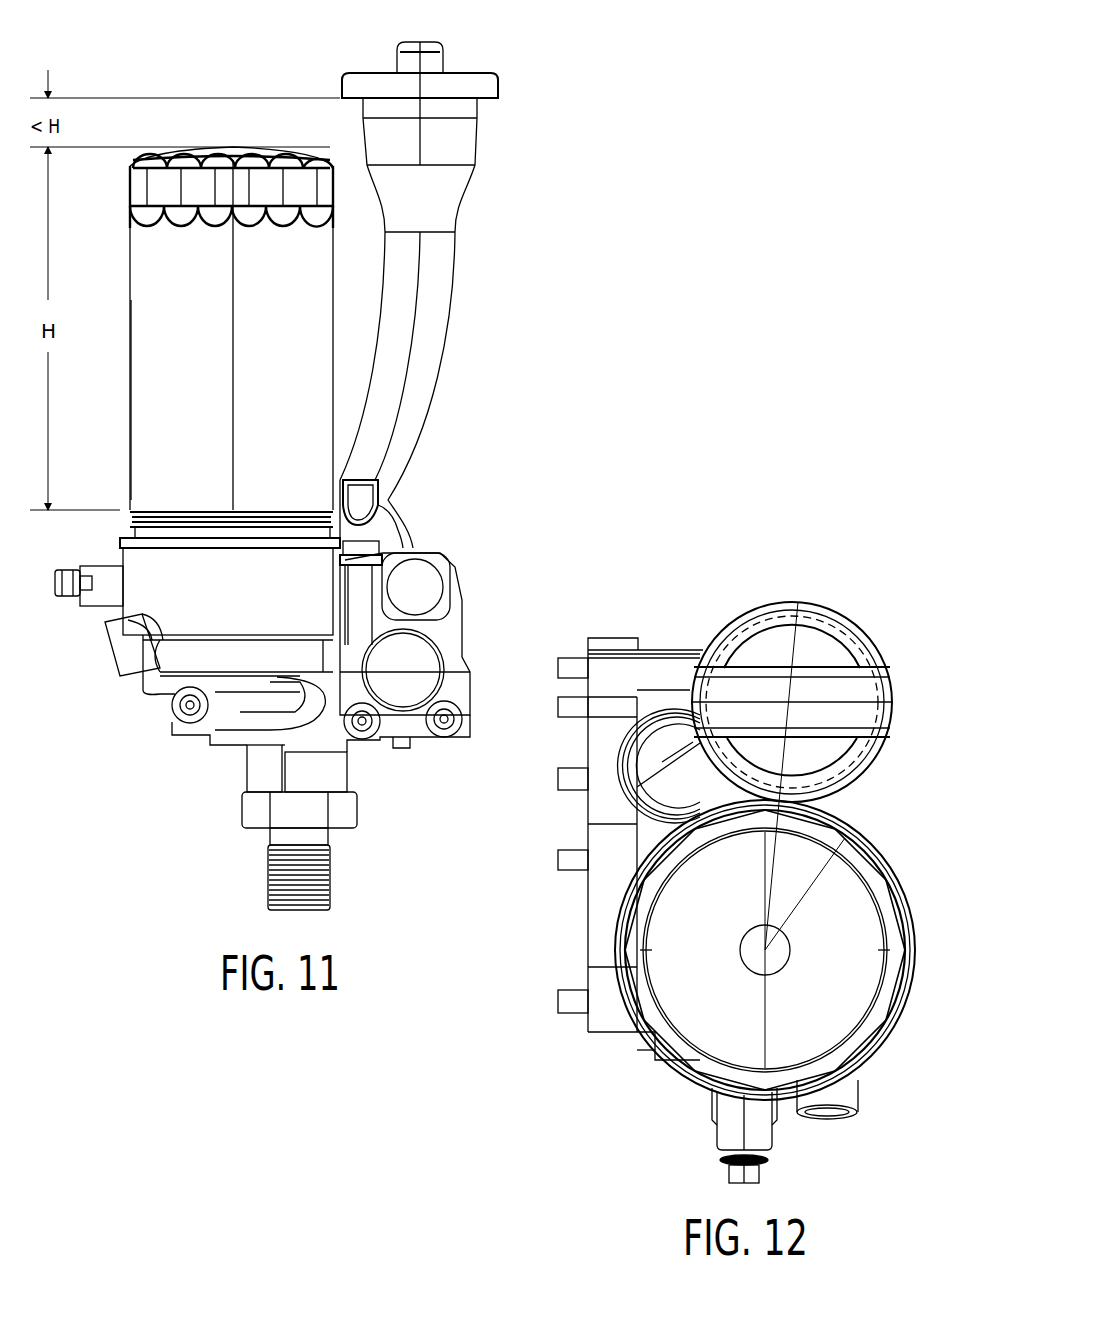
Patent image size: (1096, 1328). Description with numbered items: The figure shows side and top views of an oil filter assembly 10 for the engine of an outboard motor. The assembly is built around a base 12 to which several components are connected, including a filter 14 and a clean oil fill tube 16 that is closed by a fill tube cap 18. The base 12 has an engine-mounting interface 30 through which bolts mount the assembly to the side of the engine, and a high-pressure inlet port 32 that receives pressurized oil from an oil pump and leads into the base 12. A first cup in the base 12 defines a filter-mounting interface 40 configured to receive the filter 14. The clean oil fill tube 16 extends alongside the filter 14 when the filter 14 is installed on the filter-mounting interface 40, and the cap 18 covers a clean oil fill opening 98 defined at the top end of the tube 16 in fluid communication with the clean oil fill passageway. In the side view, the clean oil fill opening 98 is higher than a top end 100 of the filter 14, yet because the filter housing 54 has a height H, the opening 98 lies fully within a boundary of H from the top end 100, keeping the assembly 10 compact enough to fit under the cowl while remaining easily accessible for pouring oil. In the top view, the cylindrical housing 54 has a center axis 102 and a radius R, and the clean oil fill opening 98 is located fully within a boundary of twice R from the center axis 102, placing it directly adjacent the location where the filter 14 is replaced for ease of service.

In FIG. 11, the oil filter assembly 10 is at (268, 72).
In FIG. 12, the oil filter assembly 10 is at (832, 558).
In FIG. 11, the base 12 is at (110, 638).
In FIG. 12, the base 12 is at (664, 652).
In FIG. 11, the filter 14 is at (128, 308).
In FIG. 12, the filter 14 is at (910, 905).
In FIG. 11, the clean oil fill tube 16 is at (445, 352).
In FIG. 12, the clean oil fill tube 16 is at (665, 760).
In FIG. 11, the fill tube cap 18 is at (470, 72).
In FIG. 12, the fill tube cap 18 is at (835, 612).
In FIG. 12, the engine-mounting interface 30 is at (588, 826).
In FIG. 11, the high-pressure inlet port 32 is at (288, 910).
In FIG. 12, the filter-mounting interface 40 is at (872, 1052).
In FIG. 11, the housing 54 is at (128, 440).
In FIG. 12, the housing 54 is at (905, 1000).
In FIG. 11, the clean oil fill opening 98 is at (470, 92).
In FIG. 12, the clean oil fill opening 98 is at (865, 656).
In FIG. 11, the top end 100 is at (222, 148).
In FIG. 12, the center axis 102 is at (770, 958).